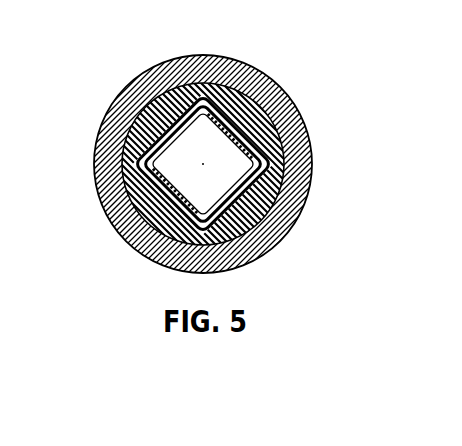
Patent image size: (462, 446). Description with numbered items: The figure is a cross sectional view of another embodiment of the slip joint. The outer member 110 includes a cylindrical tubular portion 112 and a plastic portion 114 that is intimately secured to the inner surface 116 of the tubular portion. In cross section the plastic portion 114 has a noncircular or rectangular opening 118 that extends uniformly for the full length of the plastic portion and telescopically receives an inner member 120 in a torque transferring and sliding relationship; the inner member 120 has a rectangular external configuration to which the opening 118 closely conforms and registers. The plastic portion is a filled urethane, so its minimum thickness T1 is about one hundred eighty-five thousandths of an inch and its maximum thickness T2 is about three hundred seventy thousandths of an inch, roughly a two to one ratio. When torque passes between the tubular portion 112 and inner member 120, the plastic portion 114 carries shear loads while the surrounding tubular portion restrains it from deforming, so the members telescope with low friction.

The outer member 110 is at (268, 69).
The tubular portion 112 is at (292, 108).
The plastic portion 114 is at (265, 141).
The inner surface 116 is at (268, 193).
The rectangular opening 118 is at (160, 196).
The inner member 120 is at (226, 84).
The minimum thickness T1 is at (167, 164).
The maximum thickness T2 is at (183, 144).